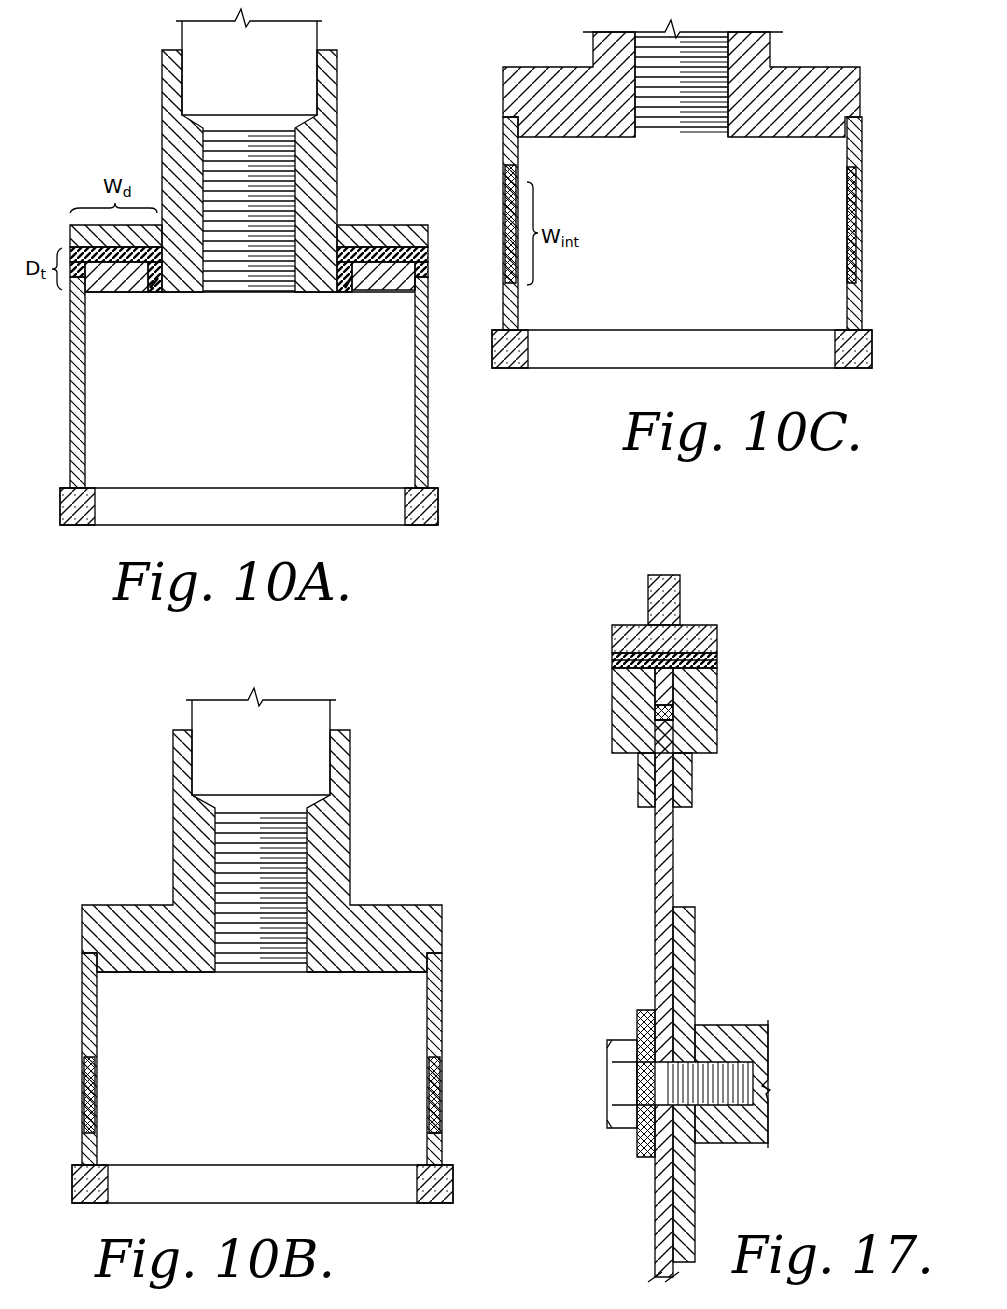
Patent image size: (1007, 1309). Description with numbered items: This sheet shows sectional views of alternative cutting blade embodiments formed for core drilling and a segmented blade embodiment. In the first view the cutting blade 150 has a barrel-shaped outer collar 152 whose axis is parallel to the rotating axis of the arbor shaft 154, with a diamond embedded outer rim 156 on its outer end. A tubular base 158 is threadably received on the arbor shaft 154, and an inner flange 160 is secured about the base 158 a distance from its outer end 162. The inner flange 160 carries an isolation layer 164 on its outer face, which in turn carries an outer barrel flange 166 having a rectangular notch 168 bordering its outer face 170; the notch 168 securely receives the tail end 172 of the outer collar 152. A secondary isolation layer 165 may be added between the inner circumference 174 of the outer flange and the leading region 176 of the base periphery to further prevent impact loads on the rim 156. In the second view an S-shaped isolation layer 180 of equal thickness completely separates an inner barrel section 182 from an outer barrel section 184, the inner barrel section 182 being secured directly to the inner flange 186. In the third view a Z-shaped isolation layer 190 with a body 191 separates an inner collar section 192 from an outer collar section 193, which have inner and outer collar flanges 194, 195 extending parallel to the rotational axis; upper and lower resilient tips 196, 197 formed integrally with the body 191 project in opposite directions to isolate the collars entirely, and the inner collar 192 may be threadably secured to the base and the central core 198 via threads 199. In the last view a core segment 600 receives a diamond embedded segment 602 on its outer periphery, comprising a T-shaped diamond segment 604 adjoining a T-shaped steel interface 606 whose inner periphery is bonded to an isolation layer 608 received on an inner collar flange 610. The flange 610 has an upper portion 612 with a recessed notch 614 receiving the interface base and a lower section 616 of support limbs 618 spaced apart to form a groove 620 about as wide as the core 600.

In FIG. 10A, the cutting blade 150 is at (440, 420).
In FIG. 10C, the cutting blade 150 is at (500, 115).
In FIG. 10B, the cutting blade 150 is at (445, 952).
In FIG. 10A, the outer collar 152 is at (430, 378).
In FIG. 10A, the arbor shaft 154 is at (310, 42).
In FIG. 10C, the arbor shaft 154 is at (655, 40).
In FIG. 10B, the arbor shaft 154 is at (318, 722).
In FIG. 10A, the outer rim 156 is at (438, 506).
In FIG. 10C, the outer rim 156 is at (512, 368).
In FIG. 10B, the outer rim 156 is at (445, 1193).
In FIG. 10A, the tubular base 158 is at (340, 138).
In FIG. 10A, the inner flange 160 is at (367, 232).
In FIG. 10A, the outer end 162 is at (312, 296).
In FIG. 10A, the isolation layer 164 is at (430, 256).
In FIG. 10A, the secondary isolation layer 165 is at (155, 292).
In FIG. 10A, the outer barrel flange 166 is at (418, 270).
In FIG. 10A, the rectangular notch 168 is at (410, 294).
In FIG. 10A, the outer face 170 is at (385, 296).
In FIG. 10A, the tail end 172 is at (420, 288).
In FIG. 10A, the inner circumference 174 is at (148, 282).
In FIG. 10A, the leading region 176 is at (178, 290).
In FIG. 10B, the isolation layer 180 is at (442, 1090).
In FIG. 10B, the inner barrel section 182 is at (440, 1020).
In FIG. 10B, the outer barrel section 184 is at (440, 1146).
In FIG. 10B, the inner flange 186 is at (395, 905).
In FIG. 10C, the isolation layer 190 is at (846, 253).
In FIG. 10C, the body 191 is at (848, 212).
In FIG. 10C, the inner collar section 192 is at (848, 170).
In FIG. 10C, the outer collar section 193 is at (860, 320).
In FIG. 10C, the inner collar flange 194 is at (858, 233).
In FIG. 10C, the outer collar flange 195 is at (848, 265).
In FIG. 10C, the upper resilient tip 196 is at (858, 290).
In FIG. 10C, the lower resilient tip 197 is at (848, 189).
In FIG. 10C, the central core 198 is at (858, 130).
In FIG. 10C, the threads 199 is at (858, 177).
In FIG. 17, the core segment 600 is at (660, 895).
In FIG. 17, the diamond embedded segment 602 is at (612, 730).
In FIG. 17, the diamond segment 604 is at (718, 632).
In FIG. 17, the steel interface 606 is at (720, 660).
In FIG. 17, the isolation layer 608 is at (675, 712).
In FIG. 17, the inner collar flange 610 is at (705, 750).
In FIG. 17, the upper portion 612 is at (718, 695).
In FIG. 17, the recessed notch 614 is at (655, 690).
In FIG. 17, the lower section 616 is at (693, 772).
In FIG. 17, the support limbs 618 is at (645, 797).
In FIG. 17, the groove 620 is at (690, 808).